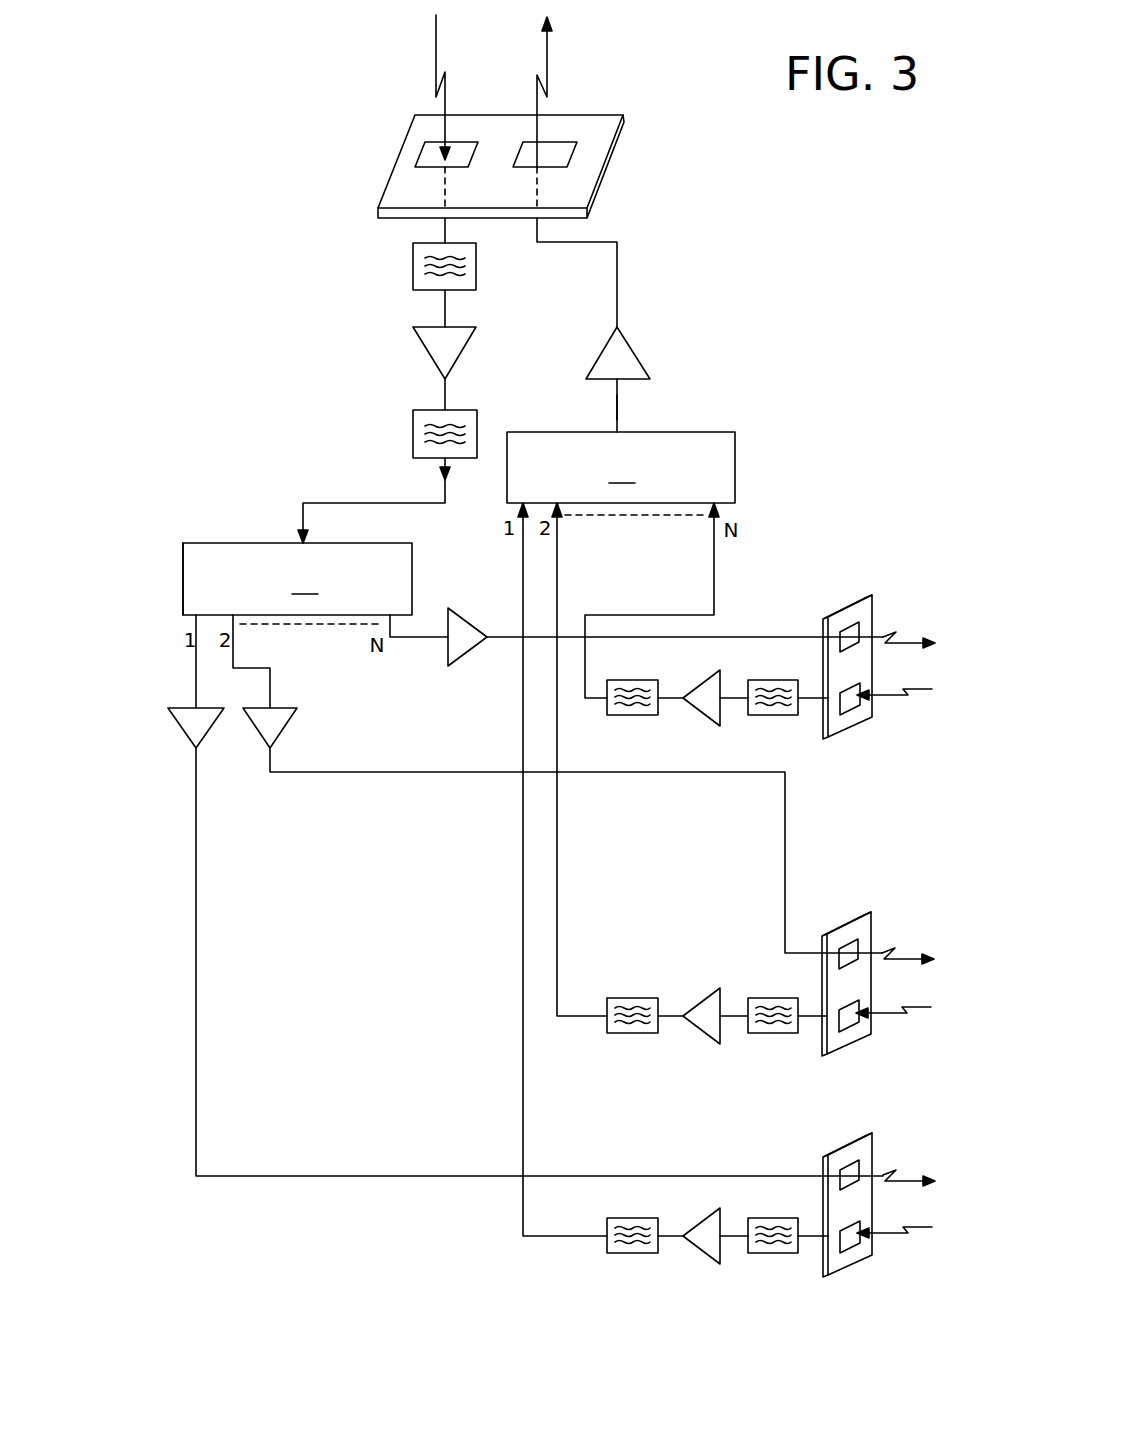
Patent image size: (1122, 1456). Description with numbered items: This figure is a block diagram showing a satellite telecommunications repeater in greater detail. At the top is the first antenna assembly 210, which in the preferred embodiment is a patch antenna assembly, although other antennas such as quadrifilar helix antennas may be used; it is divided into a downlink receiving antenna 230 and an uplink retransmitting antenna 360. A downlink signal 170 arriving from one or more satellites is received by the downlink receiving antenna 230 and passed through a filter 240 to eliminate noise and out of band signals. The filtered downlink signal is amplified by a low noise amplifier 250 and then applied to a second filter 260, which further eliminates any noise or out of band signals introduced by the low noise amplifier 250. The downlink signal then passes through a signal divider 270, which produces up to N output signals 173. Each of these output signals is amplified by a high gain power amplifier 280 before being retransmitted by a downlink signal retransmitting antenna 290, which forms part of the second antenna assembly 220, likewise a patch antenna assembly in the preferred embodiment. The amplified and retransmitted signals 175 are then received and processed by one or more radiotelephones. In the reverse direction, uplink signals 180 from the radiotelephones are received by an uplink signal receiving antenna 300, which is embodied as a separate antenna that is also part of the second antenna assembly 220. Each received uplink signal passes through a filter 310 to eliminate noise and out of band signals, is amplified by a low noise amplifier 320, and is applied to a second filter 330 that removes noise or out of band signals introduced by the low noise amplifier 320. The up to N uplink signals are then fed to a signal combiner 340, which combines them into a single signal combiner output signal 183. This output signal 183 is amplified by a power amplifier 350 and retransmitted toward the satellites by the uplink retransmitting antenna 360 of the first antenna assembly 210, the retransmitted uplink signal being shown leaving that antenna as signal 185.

The downlink signal 170 is at (435, 53).
The transmitted signal 185 is at (548, 52).
The first antenna assembly 210 is at (630, 169).
The downlink receiving antenna 230 is at (423, 157).
The uplink retransmitting antenna 360 is at (562, 148).
The filter 240 is at (413, 268).
The low noise amplifier 250 is at (427, 347).
The second filter 260 is at (413, 430).
The signal divider 270 is at (297, 579).
The output signals 173 is at (172, 622).
The power amplifiers 280 is at (185, 708).
The signal combiner 340 is at (621, 467).
The power amplifier 350 is at (632, 347).
The signal combiner output signal 183 is at (617, 408).
The second antenna assembly 220 is at (883, 585).
The downlink signal retransmitting antenna 290 is at (852, 623).
The uplink signal receiving antenna 300 is at (848, 700).
The filter 310 is at (768, 678).
The low noise amplifier 320 is at (700, 717).
The second filter 330 is at (627, 678).
The amplified and retransmitted signals 175 is at (902, 637).
The uplink signals 180 is at (920, 689).